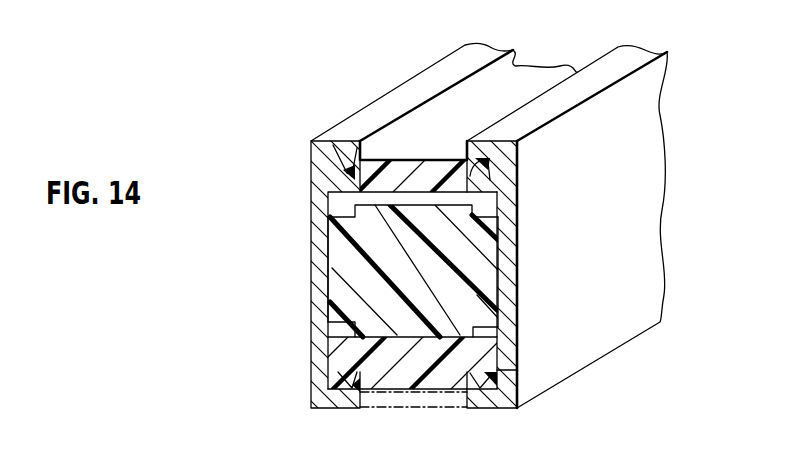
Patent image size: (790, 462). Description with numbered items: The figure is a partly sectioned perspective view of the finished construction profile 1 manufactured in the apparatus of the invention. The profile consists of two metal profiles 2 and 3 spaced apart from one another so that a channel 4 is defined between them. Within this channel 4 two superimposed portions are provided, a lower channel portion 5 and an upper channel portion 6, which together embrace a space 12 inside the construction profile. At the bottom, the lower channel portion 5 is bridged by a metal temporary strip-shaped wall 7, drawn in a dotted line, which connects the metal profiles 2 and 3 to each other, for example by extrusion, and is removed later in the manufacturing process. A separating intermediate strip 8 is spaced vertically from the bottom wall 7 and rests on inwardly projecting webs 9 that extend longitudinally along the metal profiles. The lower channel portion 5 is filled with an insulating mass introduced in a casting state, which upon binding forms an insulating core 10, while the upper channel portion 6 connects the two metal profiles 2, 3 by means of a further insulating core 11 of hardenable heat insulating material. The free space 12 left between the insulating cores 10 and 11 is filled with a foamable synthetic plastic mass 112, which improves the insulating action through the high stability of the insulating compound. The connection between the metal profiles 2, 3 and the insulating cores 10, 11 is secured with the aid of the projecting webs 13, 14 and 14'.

The sealing assembly 1 is at (284, 115).
The metal profile 2 is at (311, 258).
The metal profile 3 is at (513, 258).
The channel 4 is at (421, 205).
The lower channel portion 5 is at (508, 373).
The upper channel portion 6 is at (506, 181).
The temporary strip-shaped wall 7 is at (425, 398).
The separating intermediate strip 8 is at (337, 230).
The inwardly projecting webs 9 is at (375, 238).
The insulating core 10 is at (381, 372).
The insulating core 11 is at (398, 185).
The free space 12 is at (378, 296).
The projecting webs 13 is at (349, 170).
The projecting webs 14 is at (418, 415).
The projecting webs 14' is at (410, 332).
The foamable synthetic plastic mass 112 is at (505, 284).